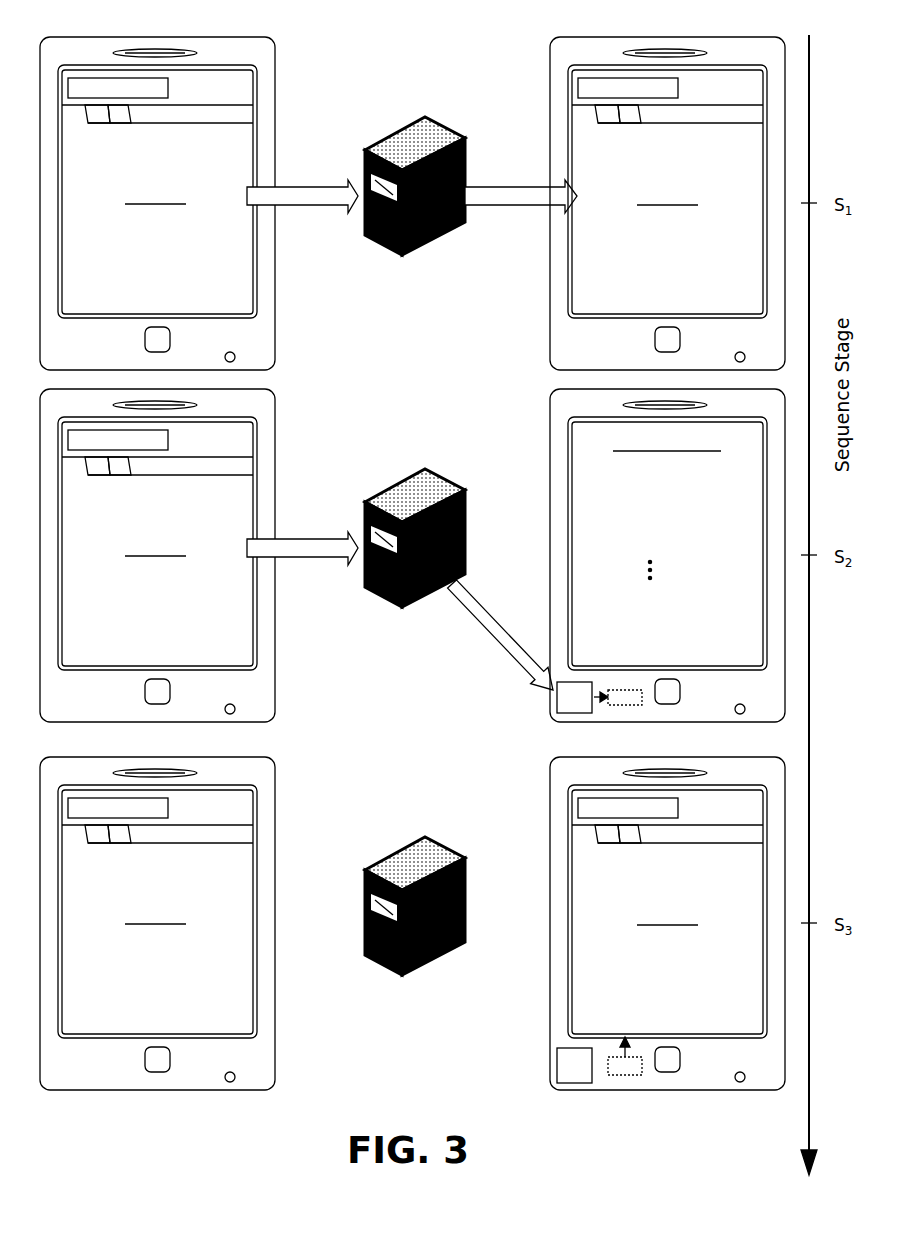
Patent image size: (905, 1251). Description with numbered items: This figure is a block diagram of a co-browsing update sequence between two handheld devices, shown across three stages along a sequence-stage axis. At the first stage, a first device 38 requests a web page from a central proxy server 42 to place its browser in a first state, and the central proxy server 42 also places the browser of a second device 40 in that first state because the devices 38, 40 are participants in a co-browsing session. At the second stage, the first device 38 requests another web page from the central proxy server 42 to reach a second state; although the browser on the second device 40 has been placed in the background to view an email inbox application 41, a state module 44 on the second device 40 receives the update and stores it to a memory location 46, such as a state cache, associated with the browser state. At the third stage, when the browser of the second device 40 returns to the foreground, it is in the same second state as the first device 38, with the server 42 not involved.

The first device 38 is at (275, 82).
The second device 40 is at (549, 75).
The email inbox application 41 is at (573, 518).
The central proxy server 42 is at (440, 120).
The state module 44 is at (557, 697).
The memory location 46 is at (622, 705).